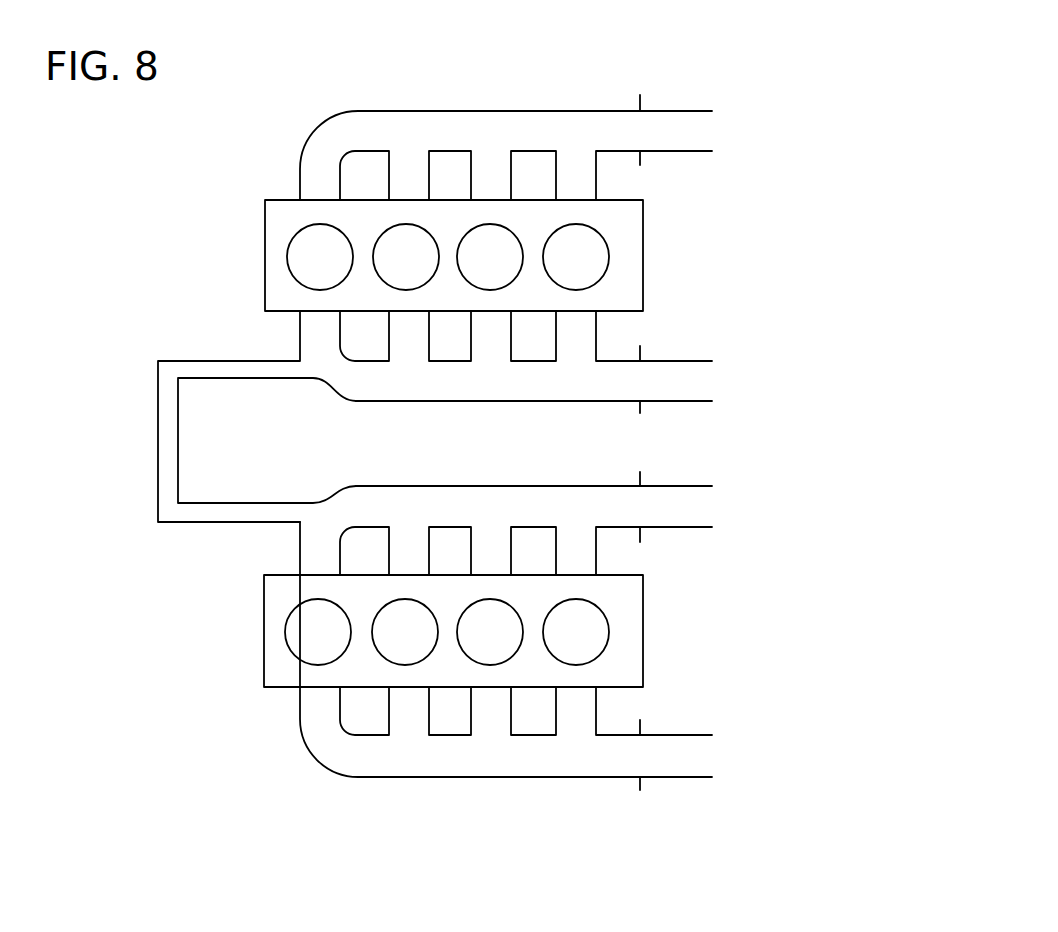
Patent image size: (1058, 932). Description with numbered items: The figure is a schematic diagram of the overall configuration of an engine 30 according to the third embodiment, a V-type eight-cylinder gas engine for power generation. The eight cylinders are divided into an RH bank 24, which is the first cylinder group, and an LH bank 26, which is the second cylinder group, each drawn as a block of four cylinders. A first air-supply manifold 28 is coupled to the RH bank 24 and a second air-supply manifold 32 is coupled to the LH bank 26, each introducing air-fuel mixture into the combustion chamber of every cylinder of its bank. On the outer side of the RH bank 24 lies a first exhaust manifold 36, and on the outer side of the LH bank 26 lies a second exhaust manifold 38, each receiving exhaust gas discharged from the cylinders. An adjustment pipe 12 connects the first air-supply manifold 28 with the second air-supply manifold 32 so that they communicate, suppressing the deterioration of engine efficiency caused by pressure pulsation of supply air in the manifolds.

The adjustment pipe 12 is at (158, 427).
The RH bank 24 is at (643, 258).
The LH bank 26 is at (643, 636).
The first air-supply manifold 28 is at (535, 110).
The engine 30 is at (441, 424).
The second air-supply manifold 32 is at (524, 778).
The first exhaust manifold 36 is at (450, 402).
The second exhaust manifold 38 is at (537, 485).